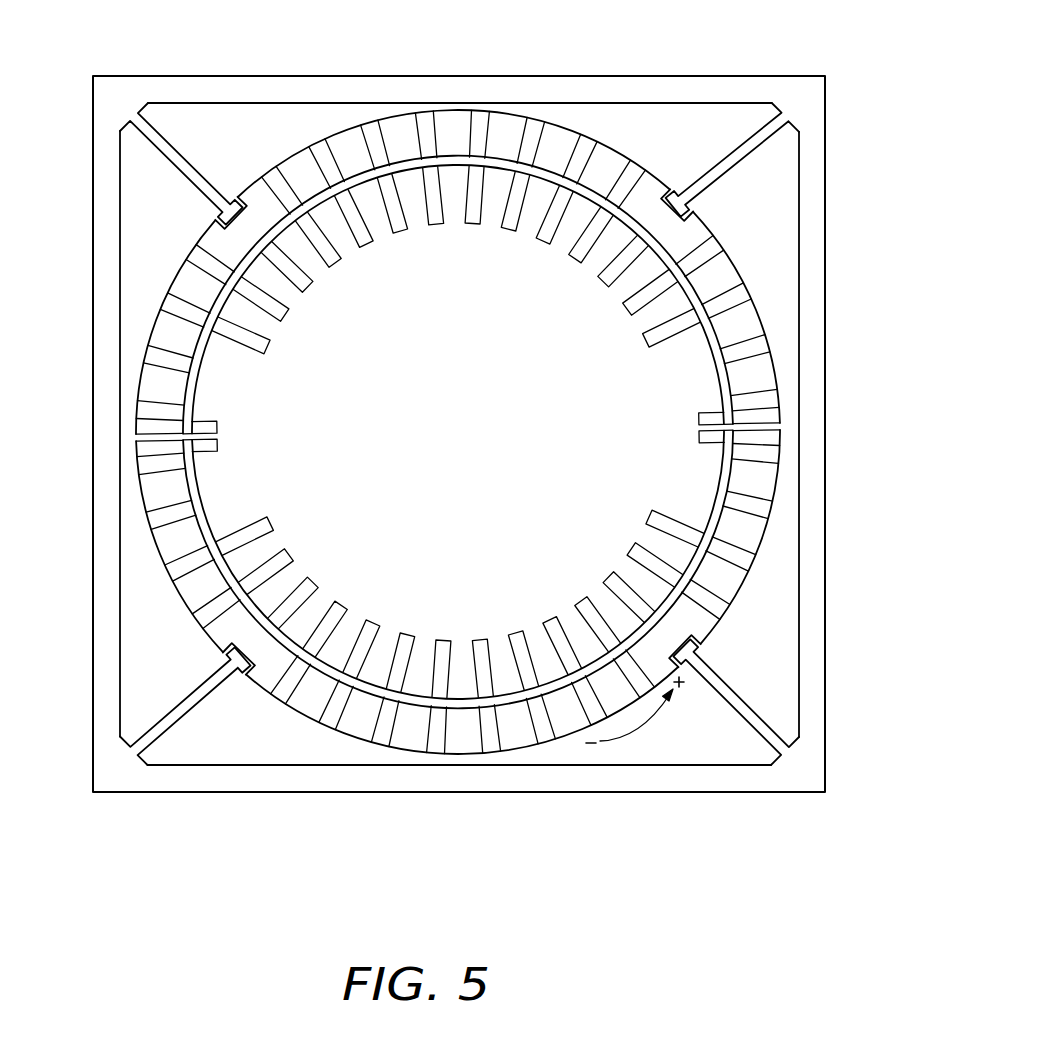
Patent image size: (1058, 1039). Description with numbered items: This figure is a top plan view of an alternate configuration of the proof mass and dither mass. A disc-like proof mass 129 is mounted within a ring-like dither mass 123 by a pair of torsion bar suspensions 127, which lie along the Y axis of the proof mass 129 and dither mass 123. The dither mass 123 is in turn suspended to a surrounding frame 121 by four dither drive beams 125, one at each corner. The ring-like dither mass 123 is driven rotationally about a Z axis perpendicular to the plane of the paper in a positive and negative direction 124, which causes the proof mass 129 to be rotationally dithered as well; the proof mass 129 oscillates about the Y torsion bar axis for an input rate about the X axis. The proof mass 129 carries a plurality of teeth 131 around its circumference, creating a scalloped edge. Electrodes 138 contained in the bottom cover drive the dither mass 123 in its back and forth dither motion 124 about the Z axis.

The frame 121 is at (692, 32).
The dither mass 123 is at (518, 377).
The positive and negative direction 124 is at (651, 729).
The dither drive beams 125 is at (208, 178).
The torsion bar suspensions 127 is at (733, 420).
The proof mass 129 is at (672, 553).
The teeth 131 is at (384, 671).
The electrodes 138 is at (431, 131).